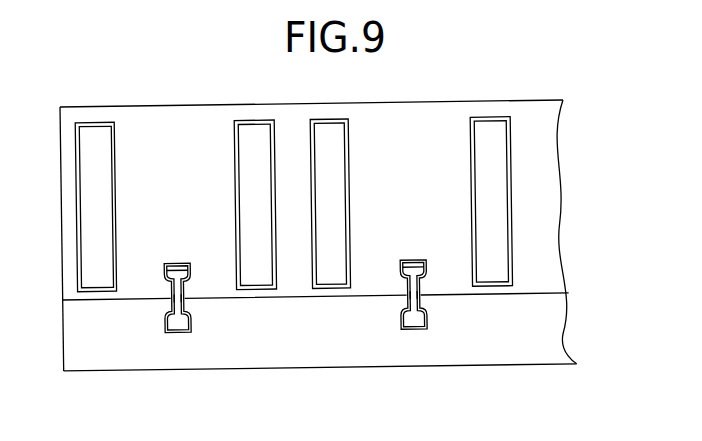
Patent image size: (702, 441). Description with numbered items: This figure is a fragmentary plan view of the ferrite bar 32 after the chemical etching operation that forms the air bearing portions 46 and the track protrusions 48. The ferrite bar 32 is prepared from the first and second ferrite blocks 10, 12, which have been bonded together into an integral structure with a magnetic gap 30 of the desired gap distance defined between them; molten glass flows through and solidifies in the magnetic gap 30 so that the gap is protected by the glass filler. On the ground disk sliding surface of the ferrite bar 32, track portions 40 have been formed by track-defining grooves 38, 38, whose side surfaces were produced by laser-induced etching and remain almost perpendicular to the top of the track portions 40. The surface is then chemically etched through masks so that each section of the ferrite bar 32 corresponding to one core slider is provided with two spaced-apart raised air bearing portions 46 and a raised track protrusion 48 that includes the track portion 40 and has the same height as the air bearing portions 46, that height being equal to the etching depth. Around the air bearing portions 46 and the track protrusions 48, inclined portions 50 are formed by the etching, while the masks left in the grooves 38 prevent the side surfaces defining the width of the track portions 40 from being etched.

The first ferrite block 10 is at (545, 221).
The second ferrite block 12 is at (534, 353).
The magnetic gap 30 is at (546, 286).
The ferrite bar 32 is at (463, 95).
The track-defining grooves 38 is at (168, 303).
The track portion 40 is at (172, 264).
The air bearing portion 46 is at (85, 165).
The track protrusion 48 is at (159, 334).
The inclined portions 50 is at (115, 143).